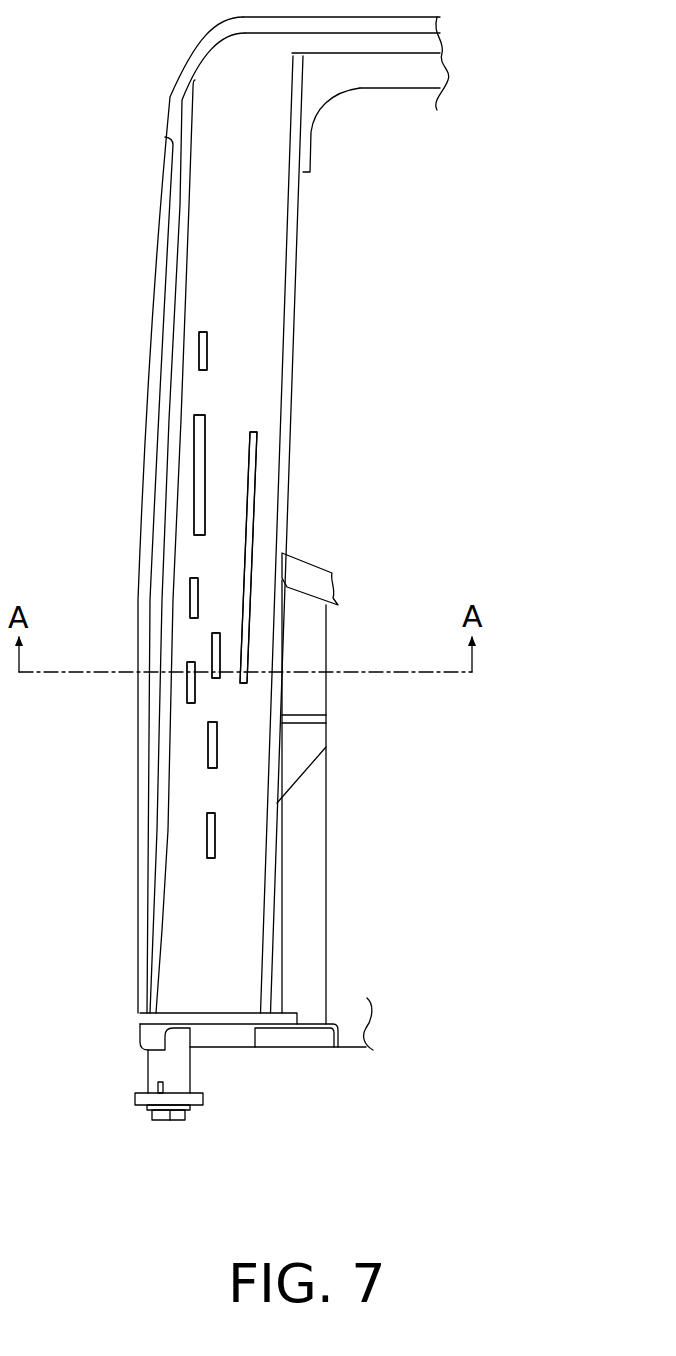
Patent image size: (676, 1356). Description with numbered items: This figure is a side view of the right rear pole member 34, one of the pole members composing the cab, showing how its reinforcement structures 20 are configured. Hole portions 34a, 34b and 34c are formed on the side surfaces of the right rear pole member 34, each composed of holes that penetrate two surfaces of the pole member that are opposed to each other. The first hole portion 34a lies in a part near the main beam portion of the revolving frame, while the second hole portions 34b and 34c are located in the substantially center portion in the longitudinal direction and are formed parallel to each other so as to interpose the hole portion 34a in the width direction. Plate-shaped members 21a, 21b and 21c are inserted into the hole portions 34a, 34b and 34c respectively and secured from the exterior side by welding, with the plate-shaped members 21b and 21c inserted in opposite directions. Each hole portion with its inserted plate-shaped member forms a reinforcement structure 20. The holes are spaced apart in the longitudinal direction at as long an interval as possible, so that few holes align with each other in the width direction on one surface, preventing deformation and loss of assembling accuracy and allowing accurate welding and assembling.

The reinforcement structure 20 is at (195, 315).
The plate-shaped member 21a is at (220, 643).
The plate-shaped member 21b is at (203, 355).
The plate-shaped member 21c is at (247, 553).
The right rear pole member 34 is at (208, 123).
The hole portion 34a is at (208, 645).
The hole portion 34b is at (197, 347).
The hole portion 34c is at (242, 558).